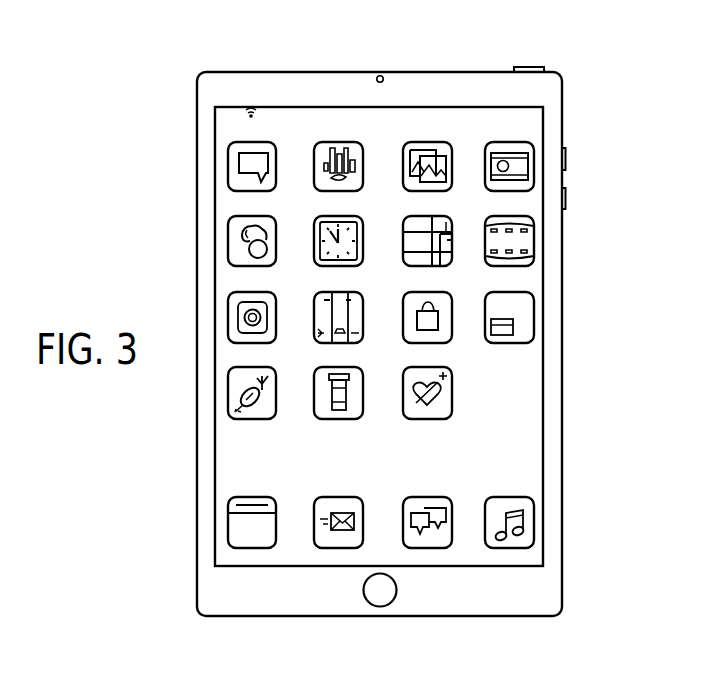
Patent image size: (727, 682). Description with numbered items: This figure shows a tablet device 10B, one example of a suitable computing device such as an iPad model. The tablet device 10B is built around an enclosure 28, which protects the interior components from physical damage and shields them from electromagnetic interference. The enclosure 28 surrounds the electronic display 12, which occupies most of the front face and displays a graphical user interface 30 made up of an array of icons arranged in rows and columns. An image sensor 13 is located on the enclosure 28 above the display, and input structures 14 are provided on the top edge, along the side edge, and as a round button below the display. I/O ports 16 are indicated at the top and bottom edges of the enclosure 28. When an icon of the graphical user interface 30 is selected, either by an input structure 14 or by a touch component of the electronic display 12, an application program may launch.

The tablet device 10B is at (204, 34).
The electronic display 12 is at (543, 452).
The image sensor 13 is at (381, 75).
The input structures 14 is at (530, 67).
The I/O ports 16 is at (292, 71).
The enclosure 28 is at (562, 315).
The graphical user interface 30 is at (530, 420).